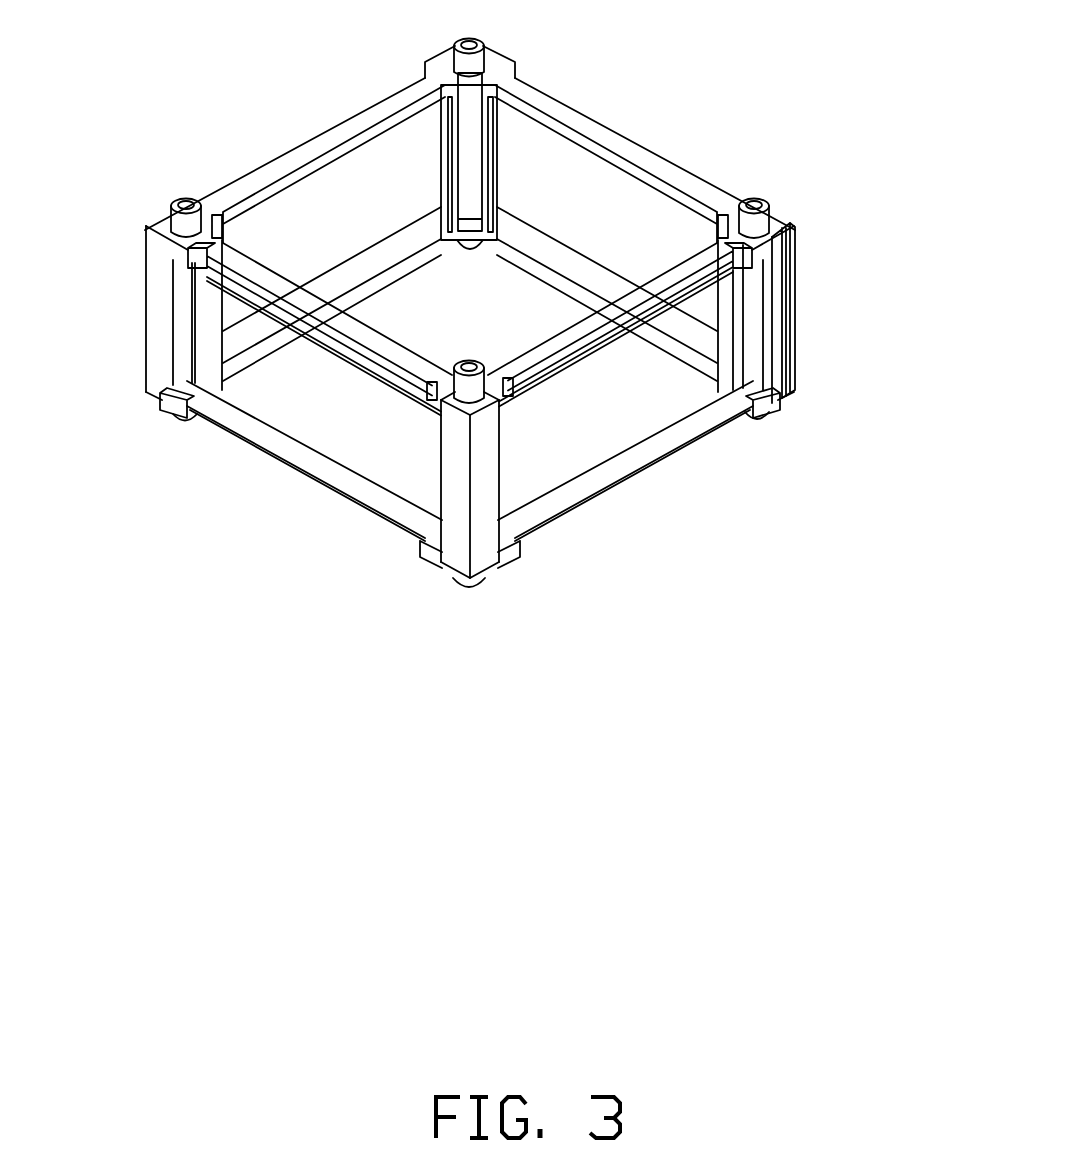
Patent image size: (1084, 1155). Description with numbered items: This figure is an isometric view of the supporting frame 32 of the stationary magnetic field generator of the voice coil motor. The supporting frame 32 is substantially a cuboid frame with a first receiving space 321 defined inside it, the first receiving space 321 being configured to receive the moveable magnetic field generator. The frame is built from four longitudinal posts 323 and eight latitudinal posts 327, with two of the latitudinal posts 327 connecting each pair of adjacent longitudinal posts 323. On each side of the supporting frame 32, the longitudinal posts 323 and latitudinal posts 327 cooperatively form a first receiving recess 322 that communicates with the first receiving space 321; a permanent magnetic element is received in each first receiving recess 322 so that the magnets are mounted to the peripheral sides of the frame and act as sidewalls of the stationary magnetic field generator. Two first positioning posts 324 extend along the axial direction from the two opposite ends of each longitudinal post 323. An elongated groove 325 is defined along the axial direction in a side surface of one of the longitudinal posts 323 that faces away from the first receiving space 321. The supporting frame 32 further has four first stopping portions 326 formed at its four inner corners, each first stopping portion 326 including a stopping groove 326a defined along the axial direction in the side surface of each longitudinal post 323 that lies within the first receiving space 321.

The supporting frame 32 is at (678, 90).
The first receiving space 321 is at (417, 300).
The first receiving recess 322 is at (819, 281).
The longitudinal post 323 is at (483, 470).
The first positioning post 324 is at (757, 205).
The elongated groove 325 is at (776, 293).
The first stopping portion 326 is at (467, 124).
The stopping groove 326a is at (468, 132).
The latitudinal post 327 is at (600, 320).